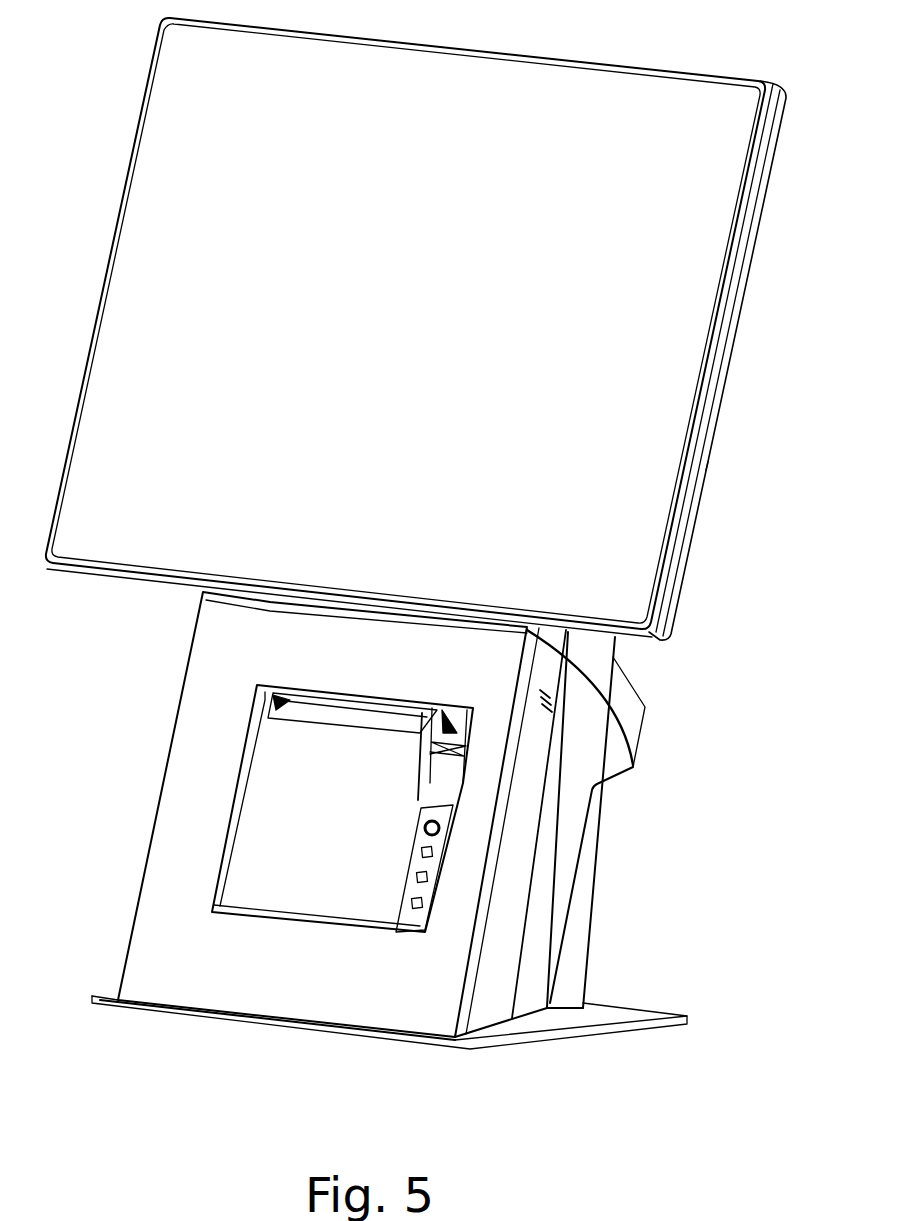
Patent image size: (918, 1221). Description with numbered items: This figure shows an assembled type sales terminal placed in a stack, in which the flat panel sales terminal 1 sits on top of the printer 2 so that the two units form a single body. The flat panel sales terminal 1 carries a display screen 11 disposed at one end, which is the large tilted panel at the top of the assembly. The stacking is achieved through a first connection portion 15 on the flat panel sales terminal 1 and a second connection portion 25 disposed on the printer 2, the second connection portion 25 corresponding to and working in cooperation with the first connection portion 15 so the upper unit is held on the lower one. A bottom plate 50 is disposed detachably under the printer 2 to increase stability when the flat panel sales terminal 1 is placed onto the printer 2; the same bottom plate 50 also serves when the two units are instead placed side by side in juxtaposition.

The flat panel sales terminal 1 is at (755, 230).
The display screen 11 is at (152, 213).
The printer 2 is at (203, 765).
The first connection portion 15 is at (624, 716).
The second connection portion 25 is at (631, 766).
The bottom plate 50 is at (647, 1015).